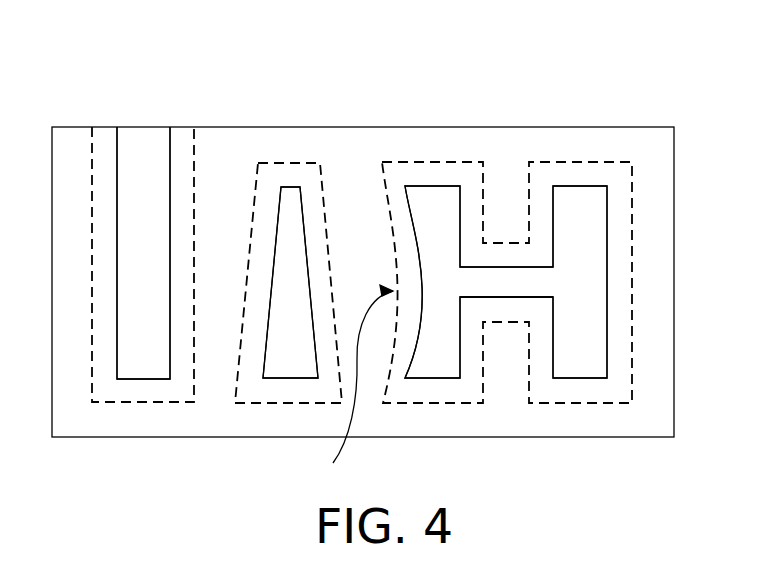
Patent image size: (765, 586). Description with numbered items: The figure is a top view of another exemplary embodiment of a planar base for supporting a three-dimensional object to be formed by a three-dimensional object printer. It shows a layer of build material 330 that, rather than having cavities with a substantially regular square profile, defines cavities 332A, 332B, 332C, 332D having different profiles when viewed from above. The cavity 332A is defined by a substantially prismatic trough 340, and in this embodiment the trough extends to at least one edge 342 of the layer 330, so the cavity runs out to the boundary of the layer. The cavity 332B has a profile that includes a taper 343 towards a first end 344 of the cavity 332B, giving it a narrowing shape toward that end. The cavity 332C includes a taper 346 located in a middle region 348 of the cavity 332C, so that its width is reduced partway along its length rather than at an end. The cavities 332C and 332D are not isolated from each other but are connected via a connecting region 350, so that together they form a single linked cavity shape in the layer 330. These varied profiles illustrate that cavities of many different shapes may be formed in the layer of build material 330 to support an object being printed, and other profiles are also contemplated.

The layer of build material 330 is at (645, 138).
The cavity 332A is at (138, 137).
The cavity 332B is at (292, 185).
The cavity 332C is at (420, 198).
The cavity 332D is at (575, 197).
The prismatic trough 340 is at (140, 362).
The edge 342 is at (183, 138).
The taper 343 is at (305, 235).
The first end 344 is at (303, 163).
The taper 346 is at (415, 290).
The middle region 348 is at (350, 389).
The connecting region 350 is at (511, 297).